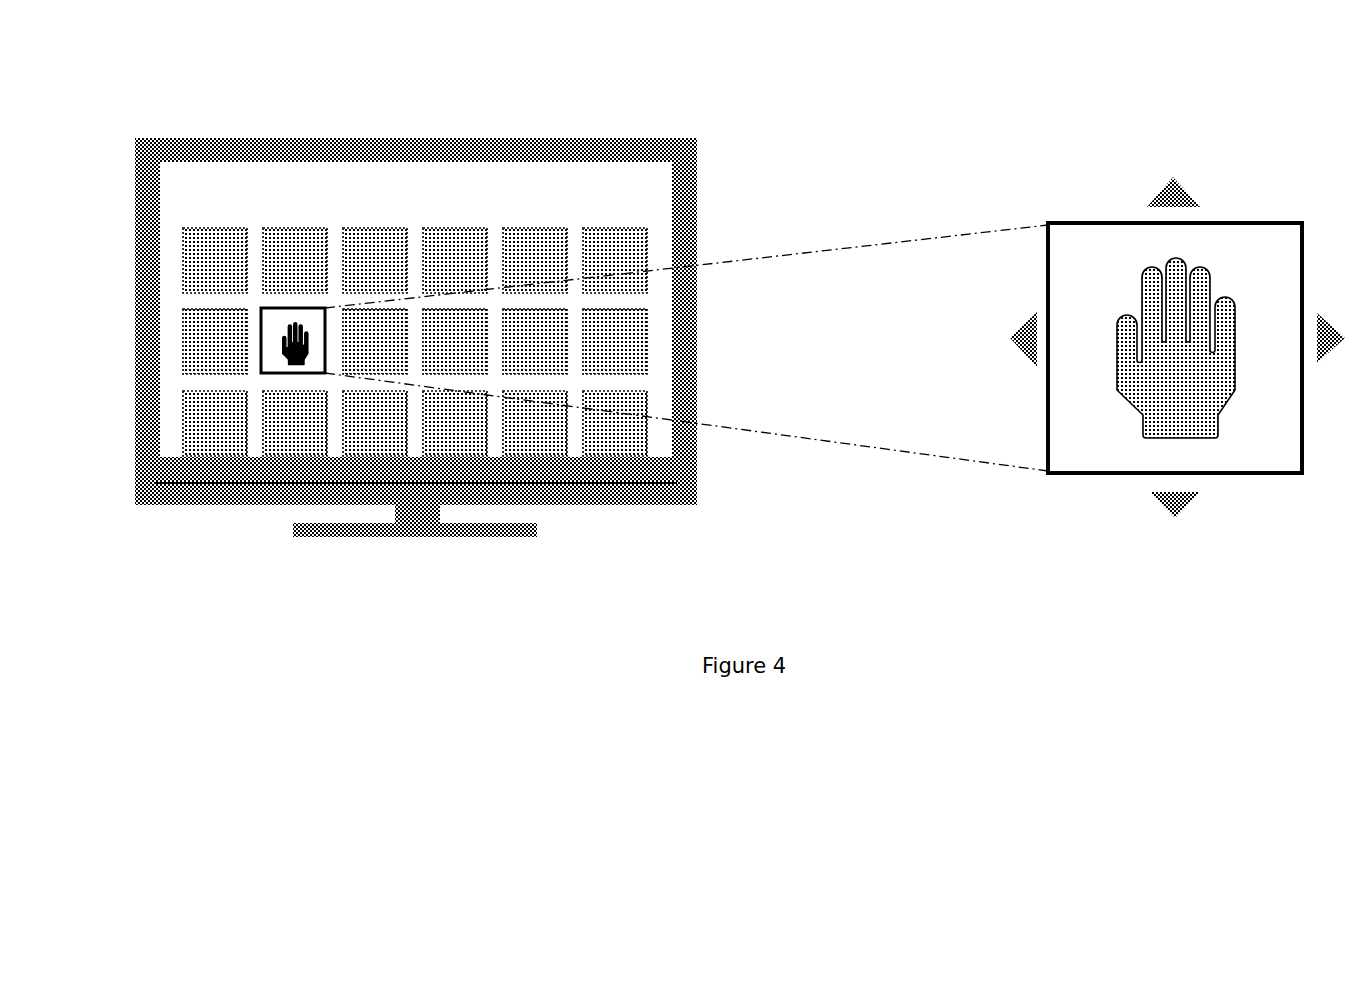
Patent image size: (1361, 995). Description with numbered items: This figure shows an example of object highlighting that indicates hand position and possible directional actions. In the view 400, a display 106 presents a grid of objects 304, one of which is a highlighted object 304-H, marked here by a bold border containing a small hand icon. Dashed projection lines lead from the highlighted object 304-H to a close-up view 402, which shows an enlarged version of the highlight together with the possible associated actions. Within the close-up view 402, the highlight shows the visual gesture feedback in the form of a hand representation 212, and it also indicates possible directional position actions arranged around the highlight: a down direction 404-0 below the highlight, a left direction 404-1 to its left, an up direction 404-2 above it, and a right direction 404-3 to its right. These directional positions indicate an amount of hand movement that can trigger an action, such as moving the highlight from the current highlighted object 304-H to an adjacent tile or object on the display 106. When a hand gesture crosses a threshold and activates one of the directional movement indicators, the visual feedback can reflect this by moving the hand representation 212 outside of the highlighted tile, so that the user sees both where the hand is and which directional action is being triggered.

The display view 400 is at (236, 70).
The close-up view 402 is at (1116, 60).
The display 106 is at (435, 196).
The objects 304 is at (612, 238).
The highlighted object 304-H is at (300, 305).
The hand representation 212 is at (1195, 404).
The down direction 404-0 is at (1180, 508).
The left direction 404-1 is at (1013, 335).
The up direction 404-2 is at (1160, 188).
The right direction 404-3 is at (1322, 358).